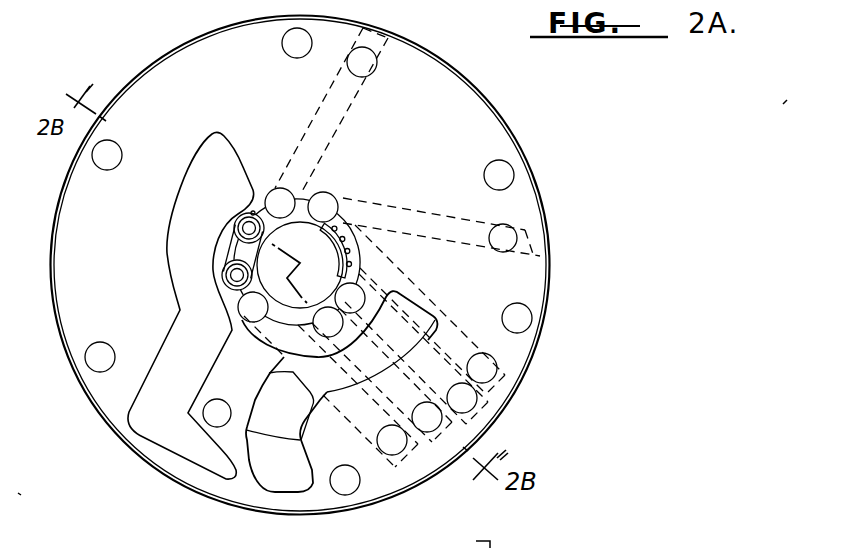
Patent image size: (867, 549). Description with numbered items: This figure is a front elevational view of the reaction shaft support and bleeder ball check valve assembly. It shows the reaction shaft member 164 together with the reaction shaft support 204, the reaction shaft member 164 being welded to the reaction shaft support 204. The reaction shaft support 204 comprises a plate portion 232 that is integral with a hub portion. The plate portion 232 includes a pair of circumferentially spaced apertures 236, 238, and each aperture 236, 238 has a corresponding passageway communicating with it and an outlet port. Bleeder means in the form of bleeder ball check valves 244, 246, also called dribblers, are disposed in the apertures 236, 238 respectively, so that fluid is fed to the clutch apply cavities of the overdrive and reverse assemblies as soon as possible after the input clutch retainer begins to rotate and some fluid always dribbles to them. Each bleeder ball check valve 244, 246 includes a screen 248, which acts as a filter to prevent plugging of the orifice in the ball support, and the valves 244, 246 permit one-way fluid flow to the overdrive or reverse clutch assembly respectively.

The reaction shaft support 204 is at (544, 205).
The plate portion 232 is at (472, 115).
The bleeder ball check valve 244 is at (241, 218).
The aperture 236 is at (247, 211).
The bleeder ball check valve 246 is at (233, 280).
The aperture 238 is at (233, 258).
The screen 248 is at (245, 273).
The reaction shaft member 164 is at (323, 239).